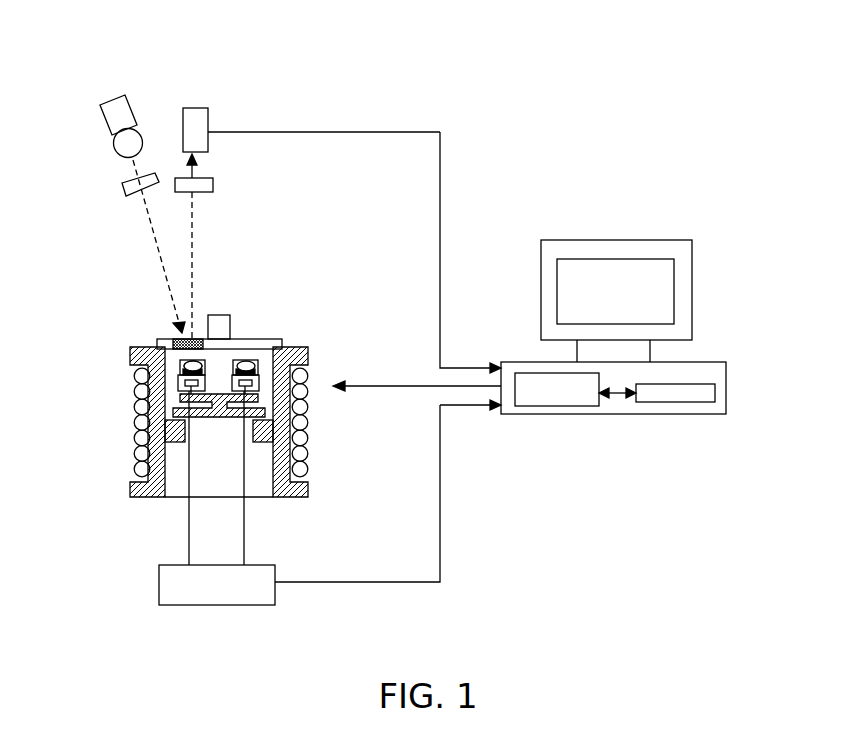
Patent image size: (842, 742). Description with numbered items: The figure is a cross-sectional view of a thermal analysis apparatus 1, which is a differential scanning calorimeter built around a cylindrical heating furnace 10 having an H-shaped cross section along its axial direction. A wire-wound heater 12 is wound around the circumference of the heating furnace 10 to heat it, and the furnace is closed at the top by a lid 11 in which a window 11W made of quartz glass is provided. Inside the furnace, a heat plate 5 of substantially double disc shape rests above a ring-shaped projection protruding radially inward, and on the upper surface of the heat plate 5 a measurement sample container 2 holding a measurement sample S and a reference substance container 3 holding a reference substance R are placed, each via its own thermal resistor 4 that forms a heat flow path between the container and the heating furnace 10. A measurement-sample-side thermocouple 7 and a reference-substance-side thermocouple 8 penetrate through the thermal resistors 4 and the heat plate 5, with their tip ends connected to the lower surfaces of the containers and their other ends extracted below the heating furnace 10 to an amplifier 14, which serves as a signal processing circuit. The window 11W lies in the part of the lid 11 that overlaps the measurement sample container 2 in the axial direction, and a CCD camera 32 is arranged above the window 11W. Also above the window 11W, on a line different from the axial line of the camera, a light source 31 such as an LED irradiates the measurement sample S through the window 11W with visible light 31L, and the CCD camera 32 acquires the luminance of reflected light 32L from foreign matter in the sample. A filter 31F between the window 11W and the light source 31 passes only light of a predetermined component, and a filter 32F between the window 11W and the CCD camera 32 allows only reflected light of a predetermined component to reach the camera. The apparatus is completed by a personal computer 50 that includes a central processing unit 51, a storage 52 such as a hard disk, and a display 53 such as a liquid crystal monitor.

The thermal analysis apparatus 1 is at (537, 160).
The light source 31 is at (135, 108).
The filter 31F is at (122, 189).
The visible light 31L is at (148, 228).
The CCD camera 32 is at (208, 130).
The filter 32F is at (213, 185).
The reflected light 32L is at (195, 237).
The heating furnace 10 is at (322, 362).
The wire-wound heater 12 is at (313, 372).
The lid 11 is at (158, 347).
The window 11W is at (197, 338).
The measurement sample S is at (185, 362).
The measurement sample container 2 is at (180, 370).
The reference substance container 3 is at (258, 383).
The reference substance R is at (240, 360).
The thermal resistor 4 is at (182, 385).
The heat plate 5 is at (218, 418).
The measurement-sample-side thermocouple 7 is at (189, 514).
The reference-substance-side thermocouple 8 is at (248, 527).
The amplifier 14 is at (159, 583).
The personal computer 50 is at (720, 308).
The central processing unit 51 is at (545, 400).
The storage 52 is at (676, 399).
The display 53 is at (655, 240).